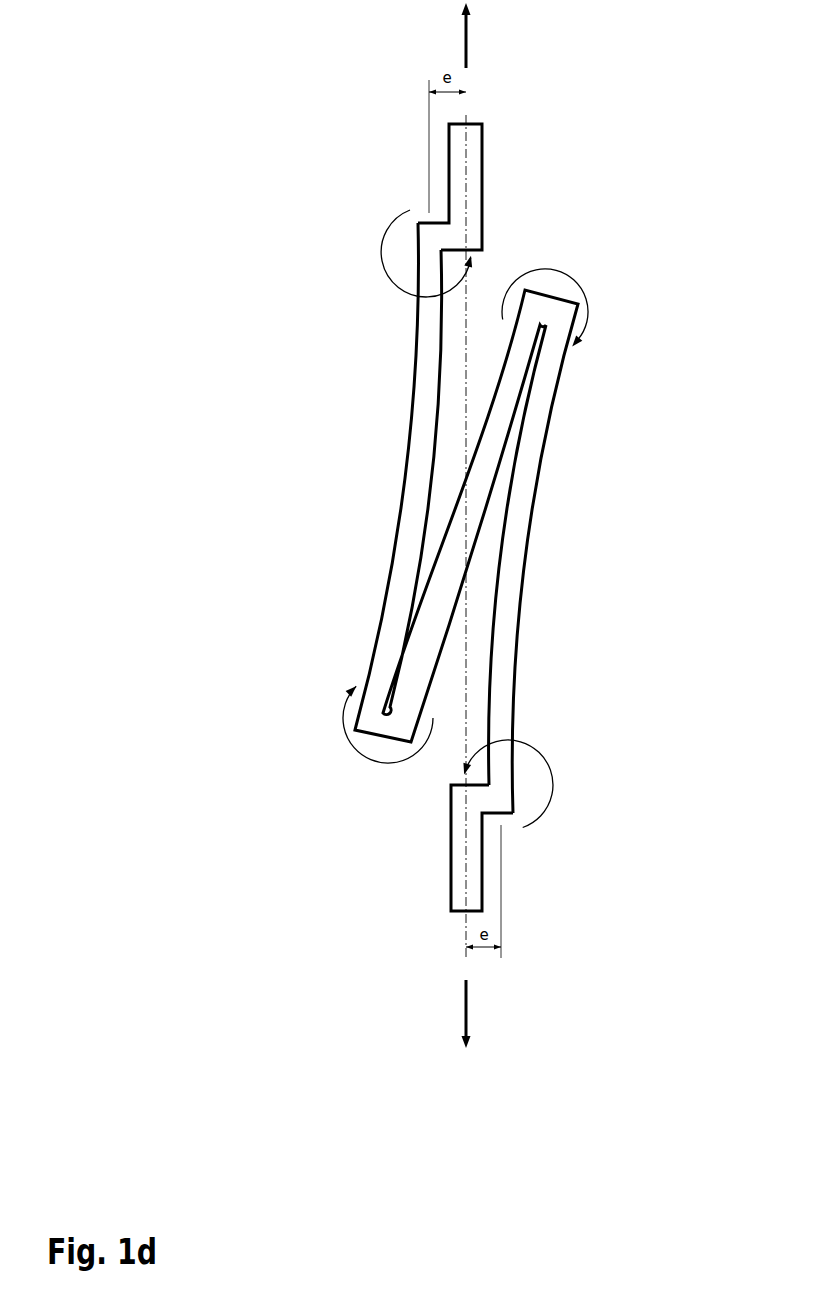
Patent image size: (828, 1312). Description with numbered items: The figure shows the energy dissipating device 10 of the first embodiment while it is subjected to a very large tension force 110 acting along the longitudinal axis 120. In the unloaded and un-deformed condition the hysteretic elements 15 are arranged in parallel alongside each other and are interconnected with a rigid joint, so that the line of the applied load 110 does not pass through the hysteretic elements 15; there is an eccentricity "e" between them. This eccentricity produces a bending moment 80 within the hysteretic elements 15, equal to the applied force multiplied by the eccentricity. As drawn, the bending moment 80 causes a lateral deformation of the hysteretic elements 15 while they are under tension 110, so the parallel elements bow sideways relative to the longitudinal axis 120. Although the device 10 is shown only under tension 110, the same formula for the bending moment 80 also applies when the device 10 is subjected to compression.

The energy dissipating device 10 is at (403, 161).
The hysteretic elements 15 is at (515, 528).
The bending moment 80 is at (473, 260).
The tension force 110 is at (466, 38).
The longitudinal axis 120 is at (463, 930).